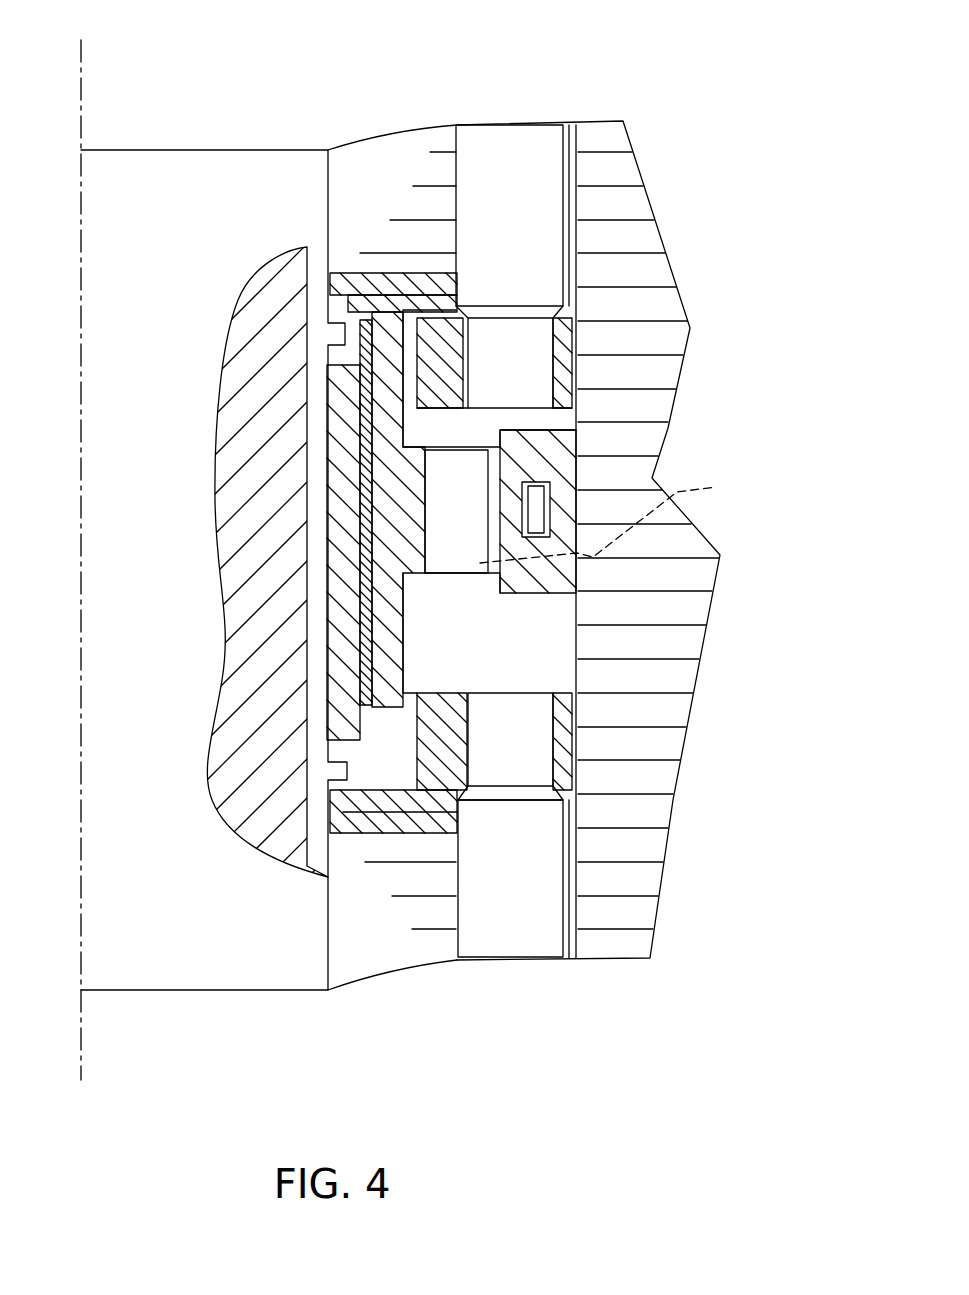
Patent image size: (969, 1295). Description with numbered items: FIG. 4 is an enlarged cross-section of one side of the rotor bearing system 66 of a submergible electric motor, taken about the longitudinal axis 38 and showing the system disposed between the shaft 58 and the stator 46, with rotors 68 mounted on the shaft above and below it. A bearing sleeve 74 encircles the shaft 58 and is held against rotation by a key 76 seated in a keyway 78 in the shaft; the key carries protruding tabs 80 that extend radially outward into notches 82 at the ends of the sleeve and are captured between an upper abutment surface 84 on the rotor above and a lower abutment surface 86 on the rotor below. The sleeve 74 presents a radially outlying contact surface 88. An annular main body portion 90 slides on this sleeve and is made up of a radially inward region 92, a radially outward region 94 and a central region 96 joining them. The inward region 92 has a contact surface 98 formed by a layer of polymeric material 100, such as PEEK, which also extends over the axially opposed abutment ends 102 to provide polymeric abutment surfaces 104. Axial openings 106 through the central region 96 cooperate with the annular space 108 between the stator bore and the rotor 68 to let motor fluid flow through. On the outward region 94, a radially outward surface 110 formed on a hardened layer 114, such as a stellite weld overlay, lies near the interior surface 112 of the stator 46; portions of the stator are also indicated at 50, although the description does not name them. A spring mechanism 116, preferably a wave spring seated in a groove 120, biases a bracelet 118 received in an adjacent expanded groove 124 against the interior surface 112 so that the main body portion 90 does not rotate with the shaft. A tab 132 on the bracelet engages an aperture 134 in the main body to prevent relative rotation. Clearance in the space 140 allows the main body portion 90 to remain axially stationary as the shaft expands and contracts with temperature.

The longitudinal axis 38 is at (81, 100).
The stator 46 is at (652, 540).
The housing wall portions 50 is at (672, 333).
The shaft 58 is at (190, 165).
The rotor bearing system 66 is at (477, 640).
The rotor 68 is at (411, 138).
The bearing sleeve 74 is at (335, 677).
The key 76 is at (320, 410).
The keyway 78 is at (323, 240).
The protruding tabs 80 is at (340, 330).
The notches 82 is at (372, 803).
The upper abutment surface 84 is at (358, 300).
The lower abutment surface 86 is at (415, 855).
The contact surface 88 is at (352, 450).
The main body portion 90 is at (352, 497).
The radially inward region 92 is at (390, 660).
The radially outward region 94 is at (537, 435).
The central region 96 is at (414, 560).
The contact surface 98 is at (368, 592).
The layer of polymeric material 100 is at (362, 545).
The abutment ends 102 is at (385, 300).
The polymeric abutment surface 104 is at (368, 305).
The axial openings 106 is at (450, 447).
The annular space 108 is at (580, 165).
The radially outward surface 110 is at (582, 440).
The interior surface 112 is at (585, 598).
The hardened layer 114 is at (503, 465).
The spring mechanism 116 is at (577, 505).
The bracelet 118 is at (570, 520).
The groove 120 is at (532, 535).
The expanded groove 124 is at (577, 467).
The tab 132 is at (478, 572).
The aperture 134 is at (623, 517).
The space 140 is at (385, 745).